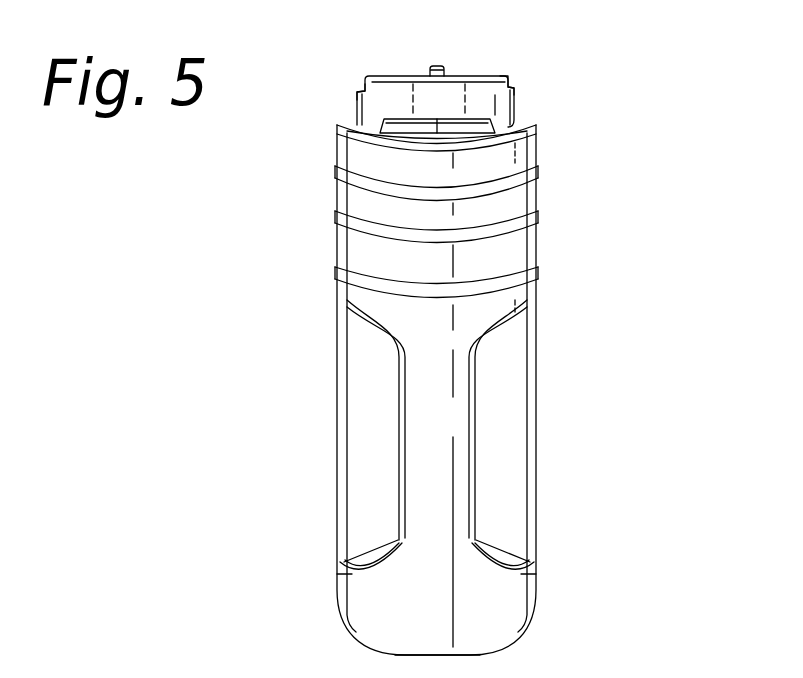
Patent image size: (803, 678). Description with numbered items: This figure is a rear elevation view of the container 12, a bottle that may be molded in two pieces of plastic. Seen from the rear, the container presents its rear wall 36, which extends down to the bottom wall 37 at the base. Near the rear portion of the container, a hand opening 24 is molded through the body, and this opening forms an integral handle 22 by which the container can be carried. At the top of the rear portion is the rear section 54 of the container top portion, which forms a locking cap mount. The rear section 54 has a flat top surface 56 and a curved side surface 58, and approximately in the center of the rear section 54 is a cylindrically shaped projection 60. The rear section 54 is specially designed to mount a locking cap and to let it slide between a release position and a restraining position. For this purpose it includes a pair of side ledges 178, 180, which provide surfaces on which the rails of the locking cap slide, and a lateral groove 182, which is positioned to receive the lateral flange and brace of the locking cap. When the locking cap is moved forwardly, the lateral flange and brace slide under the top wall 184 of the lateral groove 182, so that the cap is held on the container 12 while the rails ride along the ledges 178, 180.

The container 12 is at (612, 51).
The integral handle 22 is at (457, 436).
The hand opening 24 is at (374, 455).
The rear wall 36 is at (436, 331).
The bottom wall 37 is at (400, 656).
The rear section 54 is at (390, 77).
The flat top surface 56 is at (509, 77).
The curved side surface 58 is at (493, 106).
The cylindrically shaped projection 60 is at (436, 66).
The side ledge 178 is at (513, 85).
The side ledge 180 is at (358, 92).
The lateral groove 182 is at (407, 128).
The top wall 184 is at (452, 128).